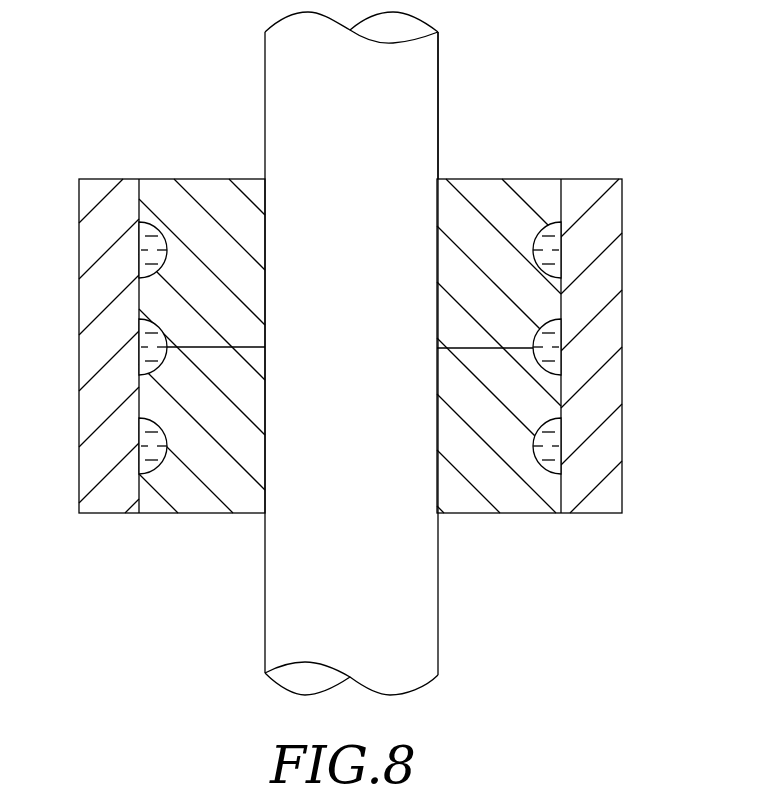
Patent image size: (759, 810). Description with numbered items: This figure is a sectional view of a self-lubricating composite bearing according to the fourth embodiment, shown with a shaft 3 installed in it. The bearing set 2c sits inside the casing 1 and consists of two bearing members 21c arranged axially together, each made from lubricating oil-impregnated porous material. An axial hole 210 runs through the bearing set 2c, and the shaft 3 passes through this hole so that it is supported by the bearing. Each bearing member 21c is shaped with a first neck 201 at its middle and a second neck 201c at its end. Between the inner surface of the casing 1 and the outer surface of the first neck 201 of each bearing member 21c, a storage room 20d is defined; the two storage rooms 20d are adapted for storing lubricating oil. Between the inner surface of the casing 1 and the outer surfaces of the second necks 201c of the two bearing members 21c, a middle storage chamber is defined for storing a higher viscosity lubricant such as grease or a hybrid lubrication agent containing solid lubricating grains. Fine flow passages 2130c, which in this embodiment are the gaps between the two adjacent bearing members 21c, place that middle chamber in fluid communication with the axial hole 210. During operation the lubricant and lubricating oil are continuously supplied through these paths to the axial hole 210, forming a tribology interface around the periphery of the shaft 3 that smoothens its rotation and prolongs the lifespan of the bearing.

The casing 1 is at (132, 346).
The shaft 3 is at (418, 591).
The first neck 201 is at (138, 230).
The bearing set 2c is at (559, 272).
The bearing member 21c is at (522, 197).
The storage room 20d is at (550, 250).
The second neck 201c is at (540, 360).
The fine flow passage 2130c is at (545, 388).
The axial hole 210 is at (438, 210).